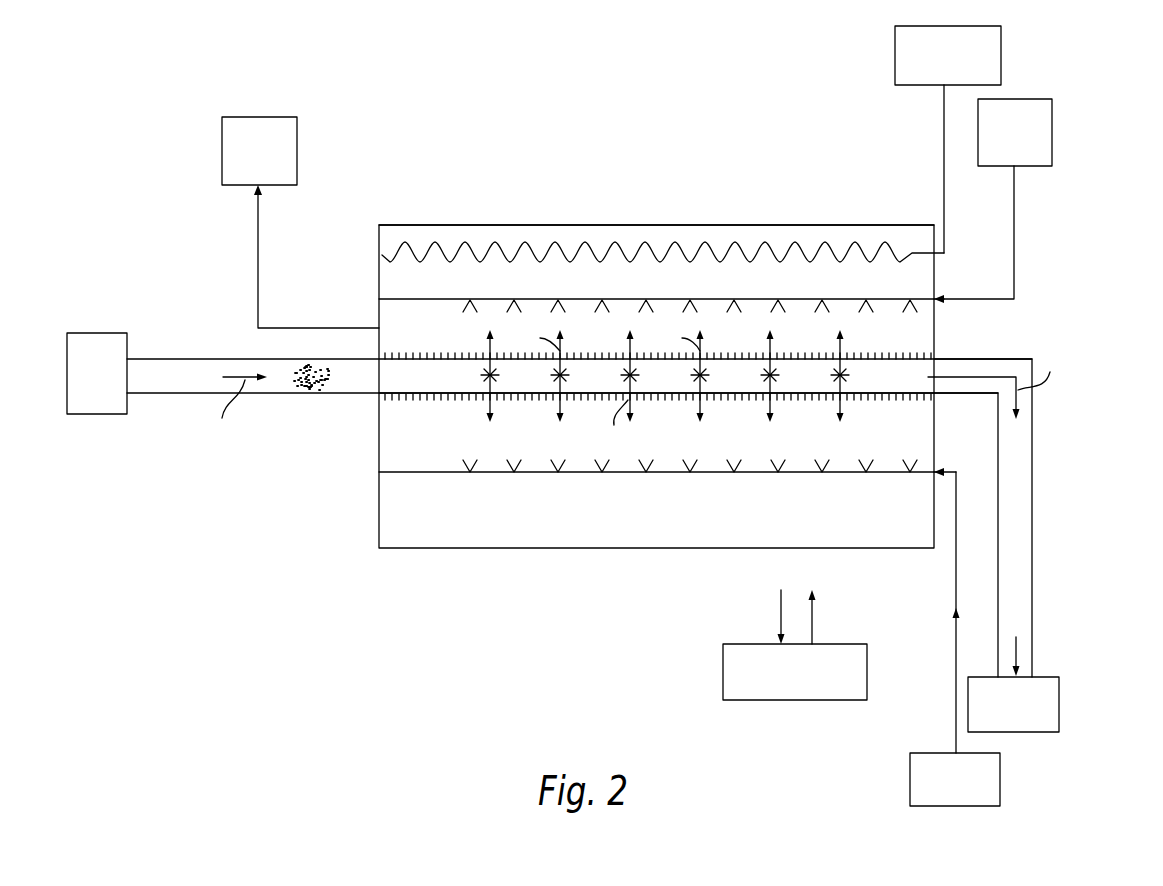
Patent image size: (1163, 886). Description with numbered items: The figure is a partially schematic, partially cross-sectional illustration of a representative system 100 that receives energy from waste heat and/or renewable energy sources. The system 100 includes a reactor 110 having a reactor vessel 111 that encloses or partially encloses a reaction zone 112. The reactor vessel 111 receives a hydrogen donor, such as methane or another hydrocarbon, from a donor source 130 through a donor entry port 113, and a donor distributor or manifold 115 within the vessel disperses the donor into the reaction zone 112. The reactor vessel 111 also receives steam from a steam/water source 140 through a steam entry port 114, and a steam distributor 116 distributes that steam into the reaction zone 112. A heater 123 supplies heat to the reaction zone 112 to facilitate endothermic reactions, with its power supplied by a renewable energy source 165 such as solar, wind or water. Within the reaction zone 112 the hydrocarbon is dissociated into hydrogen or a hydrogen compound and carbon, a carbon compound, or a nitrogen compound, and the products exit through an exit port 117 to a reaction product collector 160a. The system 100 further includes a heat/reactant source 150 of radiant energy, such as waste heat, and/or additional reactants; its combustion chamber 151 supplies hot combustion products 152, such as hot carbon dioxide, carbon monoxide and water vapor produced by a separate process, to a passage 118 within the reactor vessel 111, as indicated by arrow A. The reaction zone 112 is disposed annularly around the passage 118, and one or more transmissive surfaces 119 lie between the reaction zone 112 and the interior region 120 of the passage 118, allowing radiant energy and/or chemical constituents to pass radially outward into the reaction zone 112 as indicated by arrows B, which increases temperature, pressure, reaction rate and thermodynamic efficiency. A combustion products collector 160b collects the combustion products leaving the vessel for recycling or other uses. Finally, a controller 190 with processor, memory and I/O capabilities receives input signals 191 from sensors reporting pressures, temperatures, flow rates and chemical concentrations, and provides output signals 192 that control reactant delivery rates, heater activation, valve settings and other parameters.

The system 100 is at (497, 146).
The reactor 110 is at (872, 191).
The reactor vessel 111 is at (605, 225).
The reaction zone 112 is at (450, 336).
The donor entry port 113 is at (937, 297).
The steam entry port 114 is at (937, 471).
The donor distributor 115 is at (708, 298).
The steam distributor 116 is at (425, 474).
The exit port 117 is at (379, 328).
The passage 118 is at (398, 397).
The transmissive surface 119 is at (907, 393).
The interior region 120 is at (541, 388).
The heater 123 is at (478, 240).
The donor source 130 is at (1052, 133).
The steam/water source 140 is at (910, 785).
The heat/reactant source 150 is at (97, 333).
The combustion chamber 151 is at (97, 414).
The combustion products 152 is at (315, 393).
The reaction product collector 160a is at (297, 152).
The combustion products collector 160b is at (1040, 677).
The renewable energy source 165 is at (1001, 55).
The controller 190 is at (867, 672).
The input signals 191 is at (781, 618).
The output signals 192 is at (812, 625).